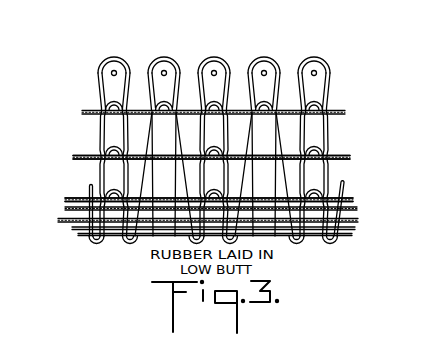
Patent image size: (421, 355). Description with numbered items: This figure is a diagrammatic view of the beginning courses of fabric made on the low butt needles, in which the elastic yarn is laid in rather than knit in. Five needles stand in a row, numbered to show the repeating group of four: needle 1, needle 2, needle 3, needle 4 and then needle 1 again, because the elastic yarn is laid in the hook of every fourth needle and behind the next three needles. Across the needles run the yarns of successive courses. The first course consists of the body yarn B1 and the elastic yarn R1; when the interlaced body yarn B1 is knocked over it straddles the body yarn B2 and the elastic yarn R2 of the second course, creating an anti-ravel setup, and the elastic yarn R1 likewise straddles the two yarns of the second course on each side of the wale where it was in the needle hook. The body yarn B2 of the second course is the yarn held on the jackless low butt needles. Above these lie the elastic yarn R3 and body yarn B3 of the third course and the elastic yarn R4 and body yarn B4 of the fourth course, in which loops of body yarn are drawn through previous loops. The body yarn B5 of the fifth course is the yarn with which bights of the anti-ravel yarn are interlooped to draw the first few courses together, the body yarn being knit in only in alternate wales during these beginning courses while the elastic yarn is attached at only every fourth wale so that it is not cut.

The needle 1 is at (216, 141).
The needle 2 is at (164, 137).
The needle 3 is at (213, 141).
The needle 4 is at (264, 137).
The body yarn of the fifth course B5 is at (82, 112).
The elastic yarn of the fourth course R4 is at (73, 152).
The body yarn of the fourth course B4 is at (70, 158).
The elastic yarn of the third course R3 is at (66, 198).
The body yarn of the third course B3 is at (63, 203).
The elastic yarn of the second course R2 is at (63, 209).
The body yarn of the second course B2 is at (73, 230).
The elastic yarn of the first course R1 is at (68, 228).
The body yarn of the first course B1 is at (82, 235).